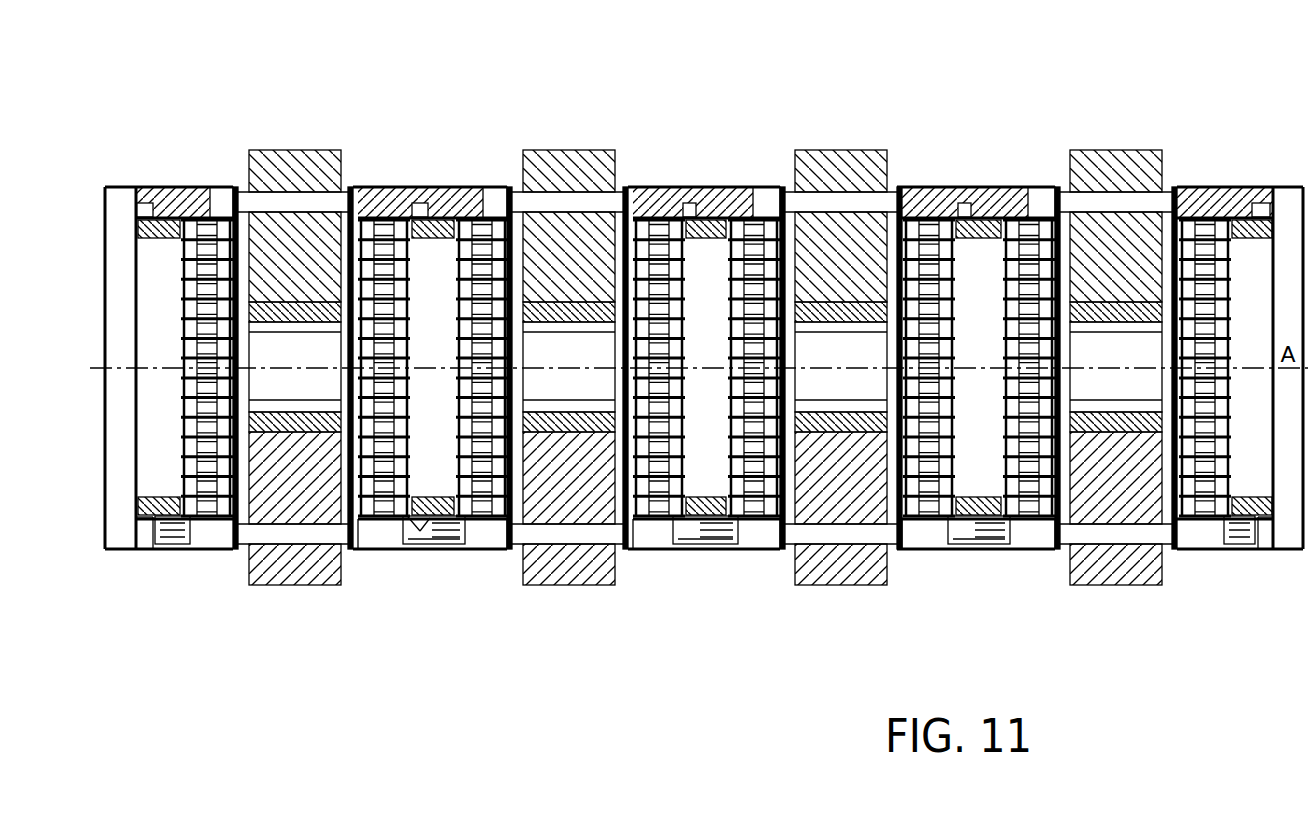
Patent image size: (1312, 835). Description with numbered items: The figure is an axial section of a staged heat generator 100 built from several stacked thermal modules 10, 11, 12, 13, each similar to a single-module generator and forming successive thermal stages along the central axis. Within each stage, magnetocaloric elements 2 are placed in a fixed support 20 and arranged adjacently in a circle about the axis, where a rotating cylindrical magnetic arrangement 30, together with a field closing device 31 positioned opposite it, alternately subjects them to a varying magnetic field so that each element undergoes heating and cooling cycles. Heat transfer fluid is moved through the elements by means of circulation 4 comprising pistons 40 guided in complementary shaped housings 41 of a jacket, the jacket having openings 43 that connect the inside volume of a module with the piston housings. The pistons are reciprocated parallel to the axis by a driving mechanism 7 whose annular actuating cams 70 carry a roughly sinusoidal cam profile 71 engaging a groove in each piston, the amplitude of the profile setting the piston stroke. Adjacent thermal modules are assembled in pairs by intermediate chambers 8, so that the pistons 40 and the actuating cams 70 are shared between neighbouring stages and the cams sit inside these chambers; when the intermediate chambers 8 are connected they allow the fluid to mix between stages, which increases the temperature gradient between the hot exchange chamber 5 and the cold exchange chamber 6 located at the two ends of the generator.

The heat generator 100 is at (1183, 112).
The hot exchange chamber 5 is at (105, 186).
The cold exchange chamber 6 is at (1303, 186).
The thermal module 10 is at (304, 305).
The thermal module 11 is at (576, 130).
The thermal module 12 is at (850, 145).
The thermal module 13 is at (1098, 148).
The magnetocaloric element 2 is at (270, 152).
The field closing device 31 is at (343, 190).
The magnetic arrangement 30 is at (224, 186).
The means of circulation 4 is at (332, 377).
The piston 40 is at (178, 200).
The housing 41 is at (517, 186).
The support 20 is at (976, 317).
The opening 43 is at (945, 275).
The driving mechanism 7 is at (424, 582).
The actuating cam 70 is at (402, 518).
The cam profile 71 is at (448, 530).
The intermediate chamber 8 is at (512, 549).